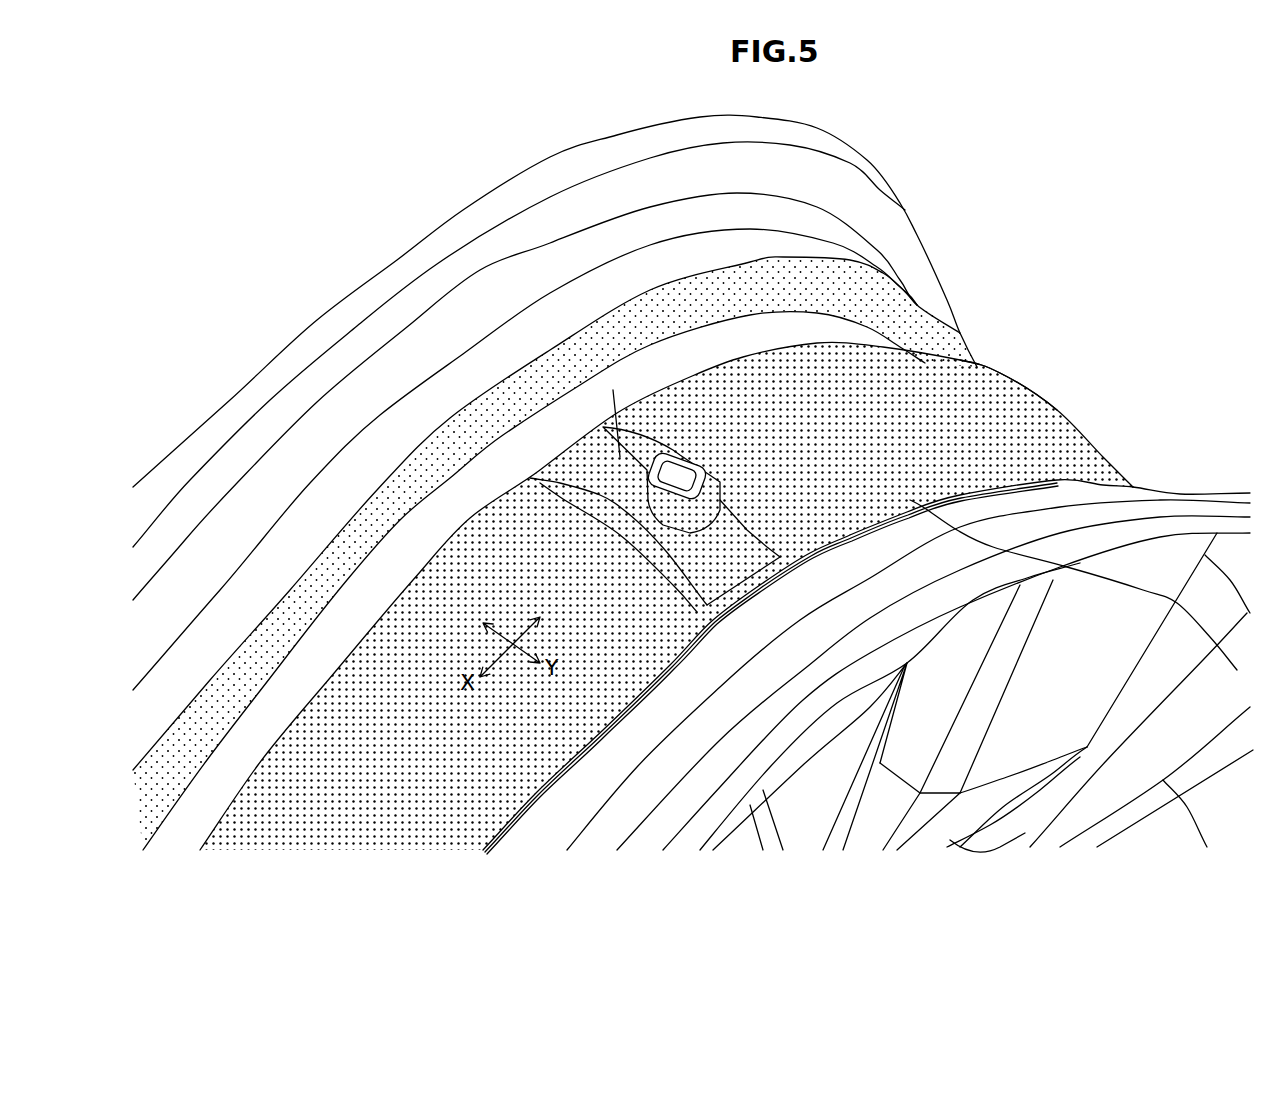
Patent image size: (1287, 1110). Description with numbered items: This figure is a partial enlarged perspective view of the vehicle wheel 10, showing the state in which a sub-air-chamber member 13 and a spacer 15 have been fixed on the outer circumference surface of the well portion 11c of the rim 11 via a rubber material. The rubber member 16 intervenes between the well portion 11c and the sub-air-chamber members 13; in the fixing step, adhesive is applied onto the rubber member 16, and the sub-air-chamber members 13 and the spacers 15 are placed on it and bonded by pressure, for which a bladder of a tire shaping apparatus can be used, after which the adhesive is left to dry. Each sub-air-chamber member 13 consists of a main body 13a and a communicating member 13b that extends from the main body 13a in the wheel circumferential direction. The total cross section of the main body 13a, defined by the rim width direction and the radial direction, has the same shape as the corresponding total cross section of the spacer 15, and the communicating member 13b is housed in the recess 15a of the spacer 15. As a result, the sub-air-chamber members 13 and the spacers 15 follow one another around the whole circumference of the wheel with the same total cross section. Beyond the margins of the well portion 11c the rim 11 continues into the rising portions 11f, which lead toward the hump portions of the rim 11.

The vehicle wheel 10 is at (1068, 240).
The rim 11 is at (815, 129).
The well portion 11c is at (383, 570).
The rising portion 11f is at (485, 423).
The sub-air-chamber member 13 is at (1067, 408).
The main body 13a is at (987, 397).
The communicating member 13b is at (683, 447).
The spacer 15 is at (548, 282).
The recess 15a is at (683, 450).
The rubber member 16 is at (910, 669).